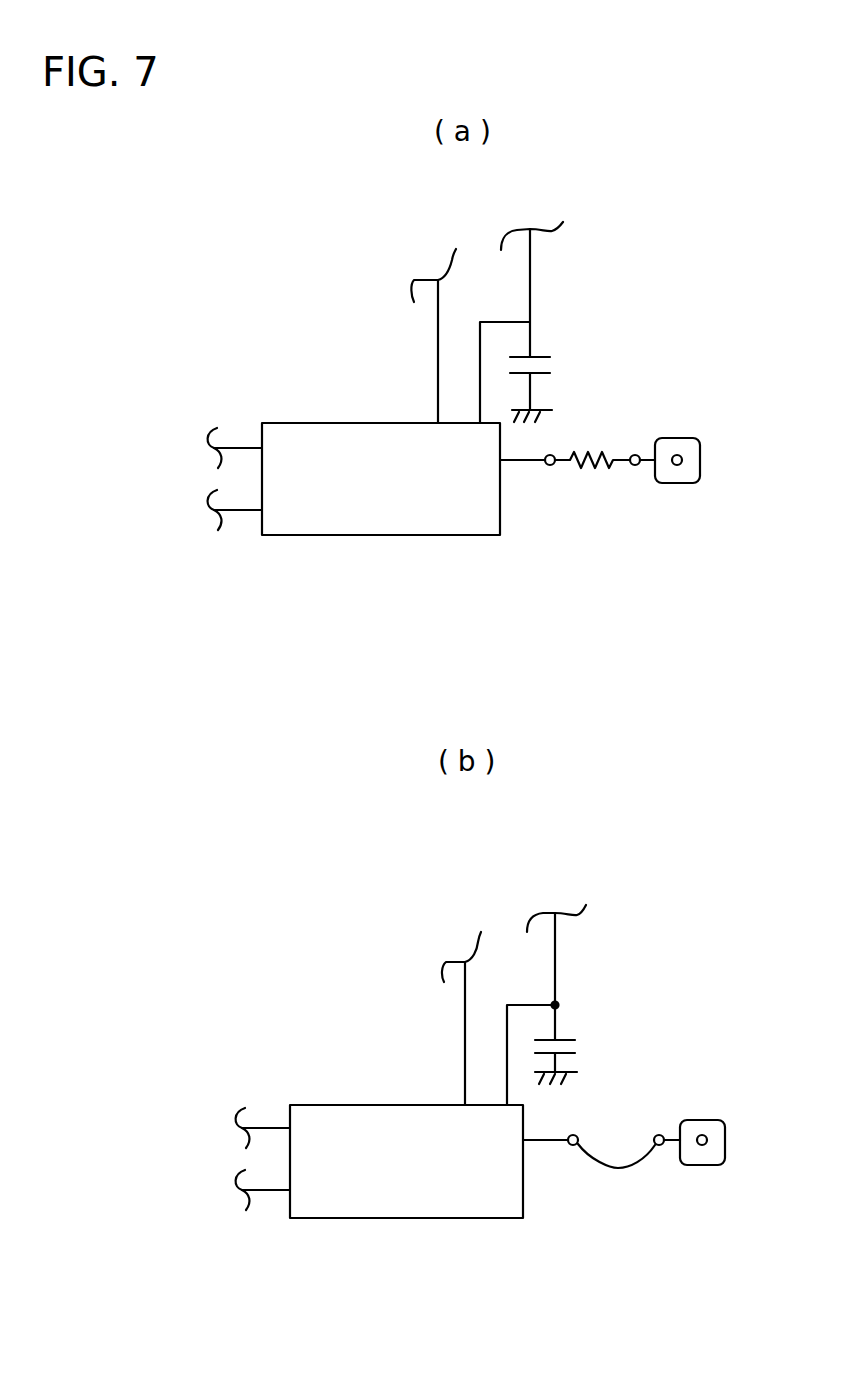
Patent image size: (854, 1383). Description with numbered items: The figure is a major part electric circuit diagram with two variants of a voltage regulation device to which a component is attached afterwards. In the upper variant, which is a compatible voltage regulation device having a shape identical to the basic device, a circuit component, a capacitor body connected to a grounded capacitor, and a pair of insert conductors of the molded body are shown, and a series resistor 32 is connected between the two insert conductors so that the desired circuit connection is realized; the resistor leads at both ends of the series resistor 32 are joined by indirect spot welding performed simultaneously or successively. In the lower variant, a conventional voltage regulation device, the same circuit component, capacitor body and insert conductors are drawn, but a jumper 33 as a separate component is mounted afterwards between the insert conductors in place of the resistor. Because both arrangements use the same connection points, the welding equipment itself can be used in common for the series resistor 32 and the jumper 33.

The series resistor 32 is at (583, 476).
The jumper 33 is at (618, 1172).